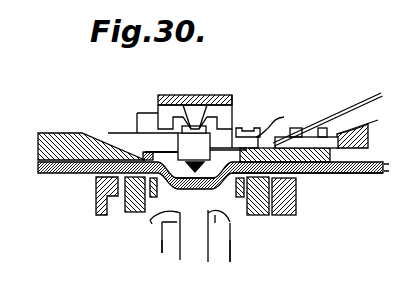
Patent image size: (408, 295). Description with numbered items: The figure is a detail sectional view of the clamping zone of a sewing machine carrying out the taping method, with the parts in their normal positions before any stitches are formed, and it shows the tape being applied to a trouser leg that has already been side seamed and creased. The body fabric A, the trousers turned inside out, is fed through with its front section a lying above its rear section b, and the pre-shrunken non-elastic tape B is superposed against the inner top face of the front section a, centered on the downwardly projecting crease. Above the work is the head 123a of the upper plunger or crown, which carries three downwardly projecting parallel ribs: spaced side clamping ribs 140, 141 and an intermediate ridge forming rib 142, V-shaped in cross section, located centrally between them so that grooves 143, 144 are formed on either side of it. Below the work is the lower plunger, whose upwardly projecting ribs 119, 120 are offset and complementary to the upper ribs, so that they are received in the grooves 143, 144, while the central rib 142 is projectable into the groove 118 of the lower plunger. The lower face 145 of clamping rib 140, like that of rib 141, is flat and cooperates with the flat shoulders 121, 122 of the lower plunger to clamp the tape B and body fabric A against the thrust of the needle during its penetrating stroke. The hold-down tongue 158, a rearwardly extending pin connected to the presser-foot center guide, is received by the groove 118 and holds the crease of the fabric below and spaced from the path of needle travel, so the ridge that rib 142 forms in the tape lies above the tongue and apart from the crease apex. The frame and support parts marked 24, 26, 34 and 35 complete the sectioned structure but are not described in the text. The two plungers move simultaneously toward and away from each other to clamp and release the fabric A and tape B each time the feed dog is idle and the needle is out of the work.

The base plate 24 is at (50, 133).
The lever 26 is at (350, 108).
The supporting block 34 is at (100, 194).
The supporting block 35 is at (128, 202).
The groove of the lower plunger 118 is at (197, 233).
The rib of the lower plunger 119 is at (230, 224).
The rib of the lower plunger 120 is at (165, 223).
The shoulder of the lower plunger 121 is at (231, 245).
The shoulder of the lower plunger 122 is at (160, 243).
The head of the upper plunger 123a is at (233, 96).
The side clamping rib 140 is at (158, 123).
The side clamping rib 141 is at (227, 117).
The intermediate ridge forming rib 142 is at (183, 94).
The groove of the upper plunger 143 is at (165, 95).
The groove of the upper plunger 144 is at (233, 96).
The lower face of clamping rib 145 is at (158, 108).
The hold-down tongue 158 is at (207, 178).
The body fabric A is at (62, 176).
The tape B is at (277, 118).
The front section a is at (368, 150).
The rear section b is at (334, 173).